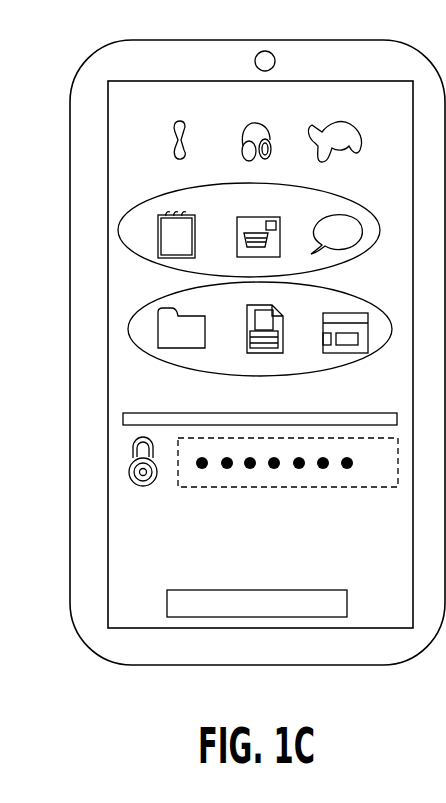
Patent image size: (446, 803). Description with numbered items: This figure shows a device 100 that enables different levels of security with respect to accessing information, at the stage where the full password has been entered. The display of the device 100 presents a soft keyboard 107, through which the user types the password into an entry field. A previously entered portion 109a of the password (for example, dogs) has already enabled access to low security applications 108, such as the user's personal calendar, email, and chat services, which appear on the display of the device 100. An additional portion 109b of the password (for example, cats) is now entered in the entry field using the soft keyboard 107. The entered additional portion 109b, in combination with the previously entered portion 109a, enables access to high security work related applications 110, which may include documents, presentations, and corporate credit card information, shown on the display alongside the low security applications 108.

The device 100 is at (90, 60).
The soft keyboard 107 is at (136, 589).
The low security applications 108 is at (342, 197).
The portion of a password 109a is at (205, 446).
The additional portion of the password 109b is at (332, 446).
The high security work related applications 110 is at (353, 293).